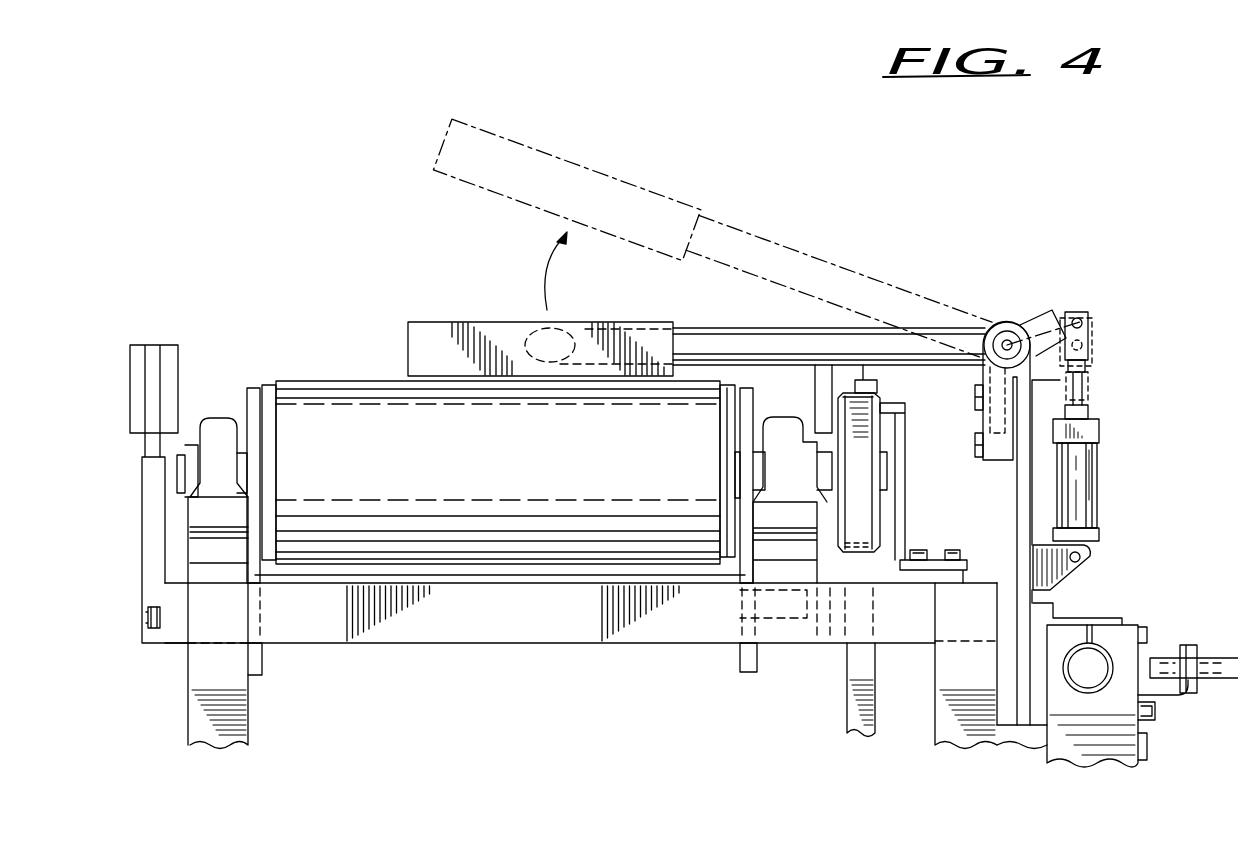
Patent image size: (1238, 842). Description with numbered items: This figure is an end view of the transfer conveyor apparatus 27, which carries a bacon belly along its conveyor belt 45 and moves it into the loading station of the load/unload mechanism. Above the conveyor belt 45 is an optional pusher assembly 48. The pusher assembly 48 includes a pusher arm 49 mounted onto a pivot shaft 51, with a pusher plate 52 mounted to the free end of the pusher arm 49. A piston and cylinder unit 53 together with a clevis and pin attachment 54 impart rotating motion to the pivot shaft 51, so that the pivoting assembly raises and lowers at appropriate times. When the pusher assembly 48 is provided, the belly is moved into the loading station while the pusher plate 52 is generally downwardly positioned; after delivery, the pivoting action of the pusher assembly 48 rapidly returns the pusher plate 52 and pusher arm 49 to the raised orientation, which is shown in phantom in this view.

The transfer conveyor apparatus 27 is at (353, 249).
The conveyor belt 45 is at (315, 395).
The pusher assembly 48 is at (975, 300).
The pusher arm 49 is at (742, 335).
The pivot shaft 51 is at (1015, 322).
The pusher plate 52 is at (428, 338).
The piston and cylinder unit 53 is at (1092, 497).
The clevis and pin attachment 54 is at (1092, 358).